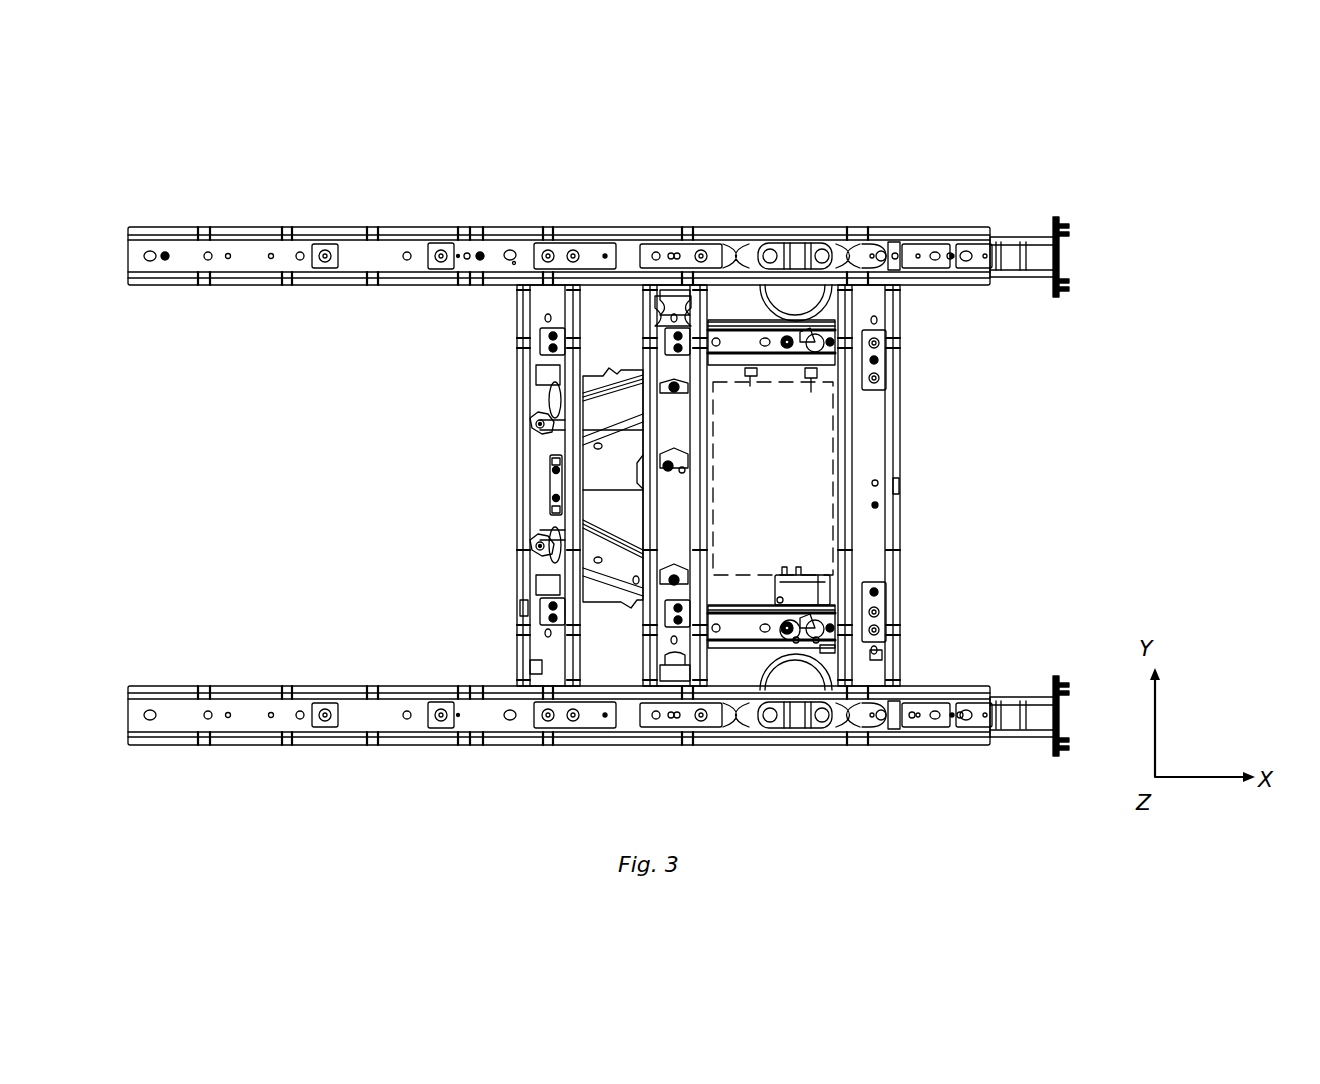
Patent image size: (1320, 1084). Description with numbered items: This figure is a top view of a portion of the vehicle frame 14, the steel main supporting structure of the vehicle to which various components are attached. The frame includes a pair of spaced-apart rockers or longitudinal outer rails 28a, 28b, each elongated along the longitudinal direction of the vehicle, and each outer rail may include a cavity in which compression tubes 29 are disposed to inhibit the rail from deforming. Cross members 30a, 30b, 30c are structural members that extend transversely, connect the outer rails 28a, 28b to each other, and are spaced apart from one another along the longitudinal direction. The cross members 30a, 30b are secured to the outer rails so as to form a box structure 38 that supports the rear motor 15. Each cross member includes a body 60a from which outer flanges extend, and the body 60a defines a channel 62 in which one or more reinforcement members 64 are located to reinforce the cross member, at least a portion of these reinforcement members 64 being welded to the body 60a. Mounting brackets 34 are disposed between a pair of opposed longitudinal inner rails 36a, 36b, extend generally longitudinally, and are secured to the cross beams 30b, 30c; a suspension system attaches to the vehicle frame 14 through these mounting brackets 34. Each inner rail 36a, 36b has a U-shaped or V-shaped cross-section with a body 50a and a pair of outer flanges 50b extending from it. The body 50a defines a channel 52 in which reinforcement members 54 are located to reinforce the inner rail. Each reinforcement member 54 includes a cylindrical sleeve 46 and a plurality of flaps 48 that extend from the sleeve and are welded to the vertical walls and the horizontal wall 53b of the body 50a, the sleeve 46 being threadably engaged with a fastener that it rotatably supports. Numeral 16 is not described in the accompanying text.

The vehicle frame 14 is at (318, 763).
The rear motor 15 is at (880, 450).
The telescoping rail assembly 16 is at (1168, 202).
The longitudinal outer rail 28a is at (397, 732).
The longitudinal outer rail 28b is at (468, 232).
The compression tube 29 is at (950, 254).
The cross member 30a is at (906, 340).
The cross member 30b is at (630, 514).
The cross member 30c is at (512, 308).
The mounting bracket 34 is at (610, 434).
The longitudinal inner rail 36a is at (822, 648).
The longitudinal inner rail 36b is at (826, 320).
The box structure 38 is at (794, 322).
The cylindrical sleeve 46 is at (790, 632).
The flap 48 is at (796, 642).
The body 50a is at (750, 625).
The outer flange 50b is at (730, 608).
The channel 52 is at (735, 645).
The horizontal wall 53b is at (740, 325).
The reinforcement member 54 is at (880, 605).
The body 60a is at (640, 316).
The channel 62 is at (545, 670).
The reinforcement member 64 is at (526, 426).